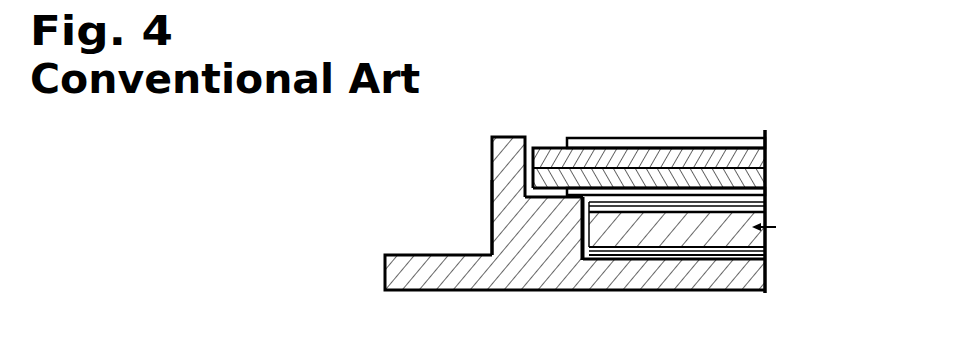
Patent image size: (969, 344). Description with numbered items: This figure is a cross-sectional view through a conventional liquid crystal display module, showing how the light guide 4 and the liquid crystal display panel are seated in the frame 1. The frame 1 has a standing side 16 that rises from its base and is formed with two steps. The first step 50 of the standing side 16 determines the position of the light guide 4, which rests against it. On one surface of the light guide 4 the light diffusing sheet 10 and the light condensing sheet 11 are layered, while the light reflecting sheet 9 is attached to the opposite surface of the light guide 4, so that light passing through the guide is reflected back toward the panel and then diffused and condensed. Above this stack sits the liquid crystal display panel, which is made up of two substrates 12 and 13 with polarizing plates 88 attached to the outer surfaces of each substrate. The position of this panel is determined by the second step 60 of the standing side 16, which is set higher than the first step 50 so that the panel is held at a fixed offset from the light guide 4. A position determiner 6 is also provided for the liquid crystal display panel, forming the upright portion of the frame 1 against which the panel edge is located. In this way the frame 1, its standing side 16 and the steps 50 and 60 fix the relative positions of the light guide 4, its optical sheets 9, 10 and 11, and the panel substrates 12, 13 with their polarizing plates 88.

The frame 1 is at (468, 278).
The light guide 4 is at (725, 238).
The position determiner 6 is at (505, 149).
The light reflecting sheet 9 is at (767, 252).
The light diffusing sheet 10 is at (769, 208).
The light condensing sheet 11 is at (768, 206).
The substrate 12 is at (678, 153).
The substrate 13 is at (735, 166).
The standing side 16 is at (552, 252).
The first step 50 is at (587, 242).
The second step 60 is at (492, 190).
The polarizing plates 88 is at (611, 190).